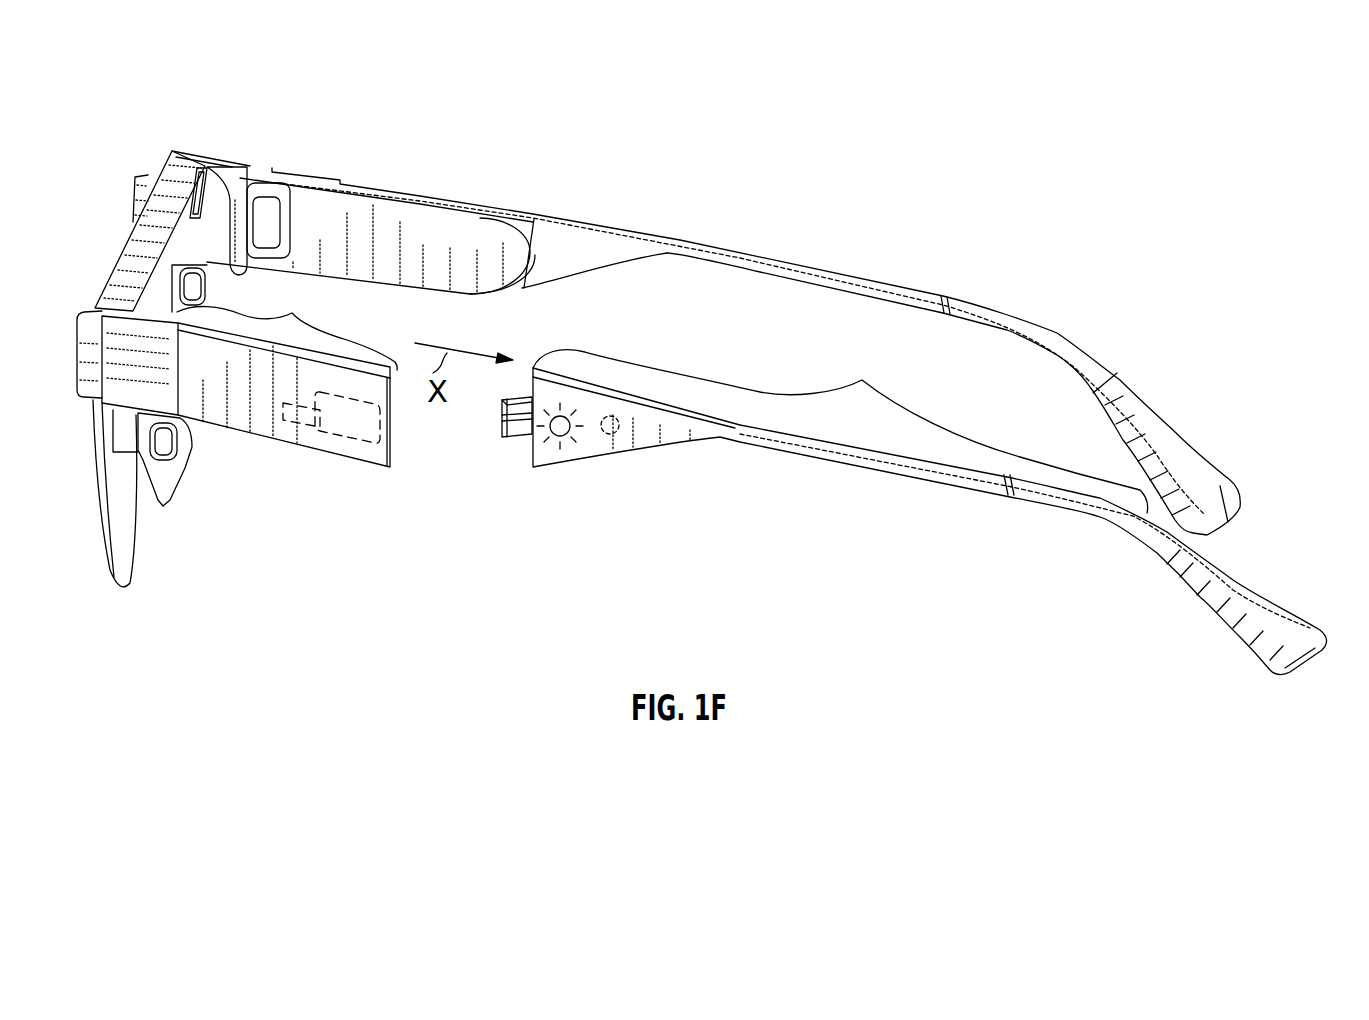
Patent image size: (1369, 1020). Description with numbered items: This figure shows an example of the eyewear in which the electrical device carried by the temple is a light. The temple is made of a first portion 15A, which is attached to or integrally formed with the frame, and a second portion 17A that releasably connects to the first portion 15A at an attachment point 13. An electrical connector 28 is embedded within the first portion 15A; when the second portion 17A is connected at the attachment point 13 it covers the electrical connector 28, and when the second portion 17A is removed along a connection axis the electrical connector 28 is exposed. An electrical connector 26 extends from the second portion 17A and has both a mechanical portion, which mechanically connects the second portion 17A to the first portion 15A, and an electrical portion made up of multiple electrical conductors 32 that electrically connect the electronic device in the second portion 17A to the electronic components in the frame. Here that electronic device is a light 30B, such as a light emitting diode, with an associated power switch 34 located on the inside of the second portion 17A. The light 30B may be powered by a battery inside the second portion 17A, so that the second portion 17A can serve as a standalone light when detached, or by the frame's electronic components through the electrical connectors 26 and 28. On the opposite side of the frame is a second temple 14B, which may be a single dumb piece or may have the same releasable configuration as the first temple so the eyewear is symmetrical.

The attachment point 13 is at (397, 418).
The second temple 14B is at (880, 283).
The first portion 15A is at (381, 260).
The second portion 17A is at (930, 509).
The electrical connector 26 is at (513, 440).
The electrical connector 28 is at (363, 440).
The light 30B is at (563, 437).
The electrical conductors 32 is at (507, 400).
The power switch 34 is at (617, 437).